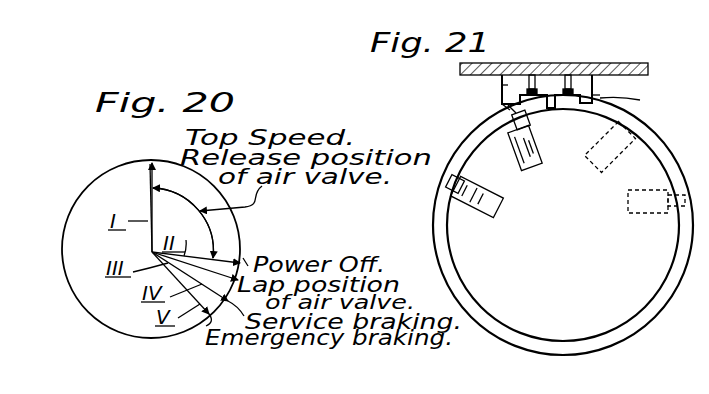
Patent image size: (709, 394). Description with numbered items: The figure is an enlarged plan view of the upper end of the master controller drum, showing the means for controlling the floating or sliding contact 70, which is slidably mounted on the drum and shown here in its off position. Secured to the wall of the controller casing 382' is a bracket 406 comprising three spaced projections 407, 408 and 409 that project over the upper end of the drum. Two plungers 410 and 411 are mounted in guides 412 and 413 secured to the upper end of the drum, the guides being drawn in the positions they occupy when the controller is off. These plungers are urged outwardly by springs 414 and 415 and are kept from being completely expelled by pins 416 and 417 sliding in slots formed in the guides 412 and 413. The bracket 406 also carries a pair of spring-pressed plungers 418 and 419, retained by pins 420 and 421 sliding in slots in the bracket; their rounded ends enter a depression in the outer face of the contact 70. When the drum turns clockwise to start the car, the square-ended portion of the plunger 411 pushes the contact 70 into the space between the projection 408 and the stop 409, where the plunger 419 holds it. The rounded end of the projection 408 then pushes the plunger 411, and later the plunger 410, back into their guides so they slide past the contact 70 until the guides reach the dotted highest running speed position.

The contact 70 is at (548, 112).
The controller casing 382' is at (566, 59).
The bracket 406 is at (550, 84).
The projection 407 is at (508, 104).
The projection 408 is at (610, 110).
The stop 409 is at (603, 103).
The plunger 410 is at (455, 192).
The plunger 411 is at (512, 121).
The guide 412 is at (492, 213).
The guide 413 is at (539, 164).
The spring 414 is at (497, 196).
The spring 415 is at (541, 150).
The pin 416 is at (468, 212).
The pin 417 is at (512, 132).
The spring-pressed plunger 418 is at (502, 88).
The spring-pressed plunger 419 is at (596, 93).
The pin 420 is at (532, 80).
The pin 421 is at (587, 82).